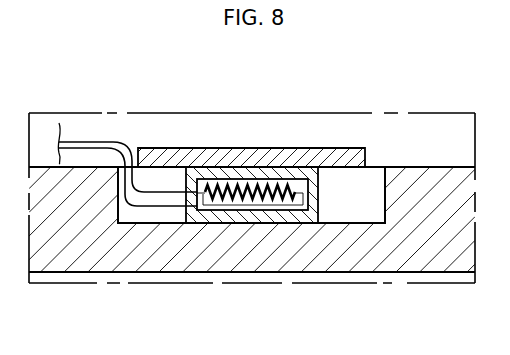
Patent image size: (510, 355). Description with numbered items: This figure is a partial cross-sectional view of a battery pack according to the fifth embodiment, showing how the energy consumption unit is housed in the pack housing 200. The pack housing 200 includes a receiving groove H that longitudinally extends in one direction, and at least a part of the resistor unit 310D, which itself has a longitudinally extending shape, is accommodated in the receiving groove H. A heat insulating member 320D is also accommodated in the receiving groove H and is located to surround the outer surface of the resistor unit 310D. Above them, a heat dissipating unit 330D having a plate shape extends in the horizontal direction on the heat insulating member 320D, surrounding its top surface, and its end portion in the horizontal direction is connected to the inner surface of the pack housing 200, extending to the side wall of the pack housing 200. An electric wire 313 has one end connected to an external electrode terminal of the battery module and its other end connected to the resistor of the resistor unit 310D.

The pack housing 200 is at (400, 272).
The receiving groove H is at (369, 223).
The heat dissipating unit 330D is at (338, 148).
The heat insulating member 320D is at (309, 223).
The resistor unit 310D is at (248, 210).
The electric wire 313 is at (92, 142).